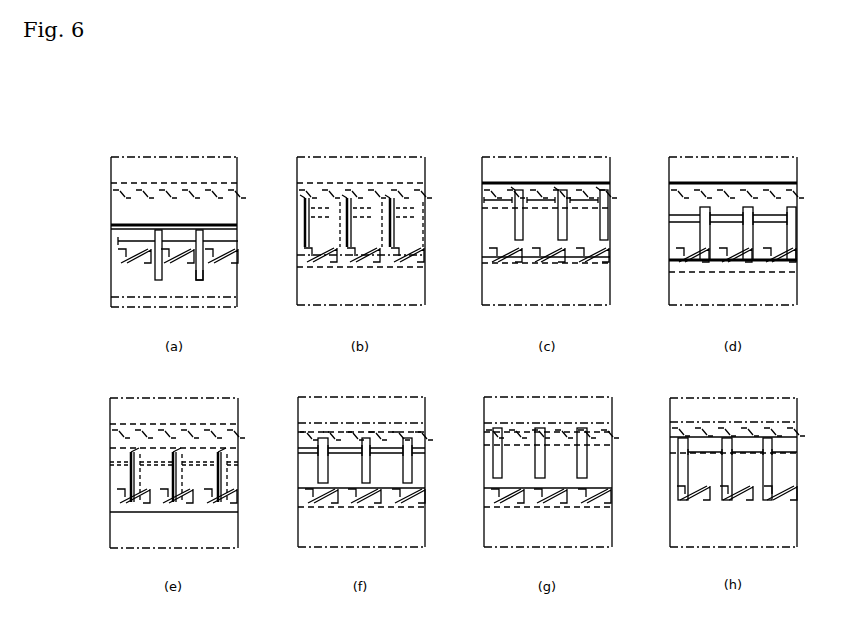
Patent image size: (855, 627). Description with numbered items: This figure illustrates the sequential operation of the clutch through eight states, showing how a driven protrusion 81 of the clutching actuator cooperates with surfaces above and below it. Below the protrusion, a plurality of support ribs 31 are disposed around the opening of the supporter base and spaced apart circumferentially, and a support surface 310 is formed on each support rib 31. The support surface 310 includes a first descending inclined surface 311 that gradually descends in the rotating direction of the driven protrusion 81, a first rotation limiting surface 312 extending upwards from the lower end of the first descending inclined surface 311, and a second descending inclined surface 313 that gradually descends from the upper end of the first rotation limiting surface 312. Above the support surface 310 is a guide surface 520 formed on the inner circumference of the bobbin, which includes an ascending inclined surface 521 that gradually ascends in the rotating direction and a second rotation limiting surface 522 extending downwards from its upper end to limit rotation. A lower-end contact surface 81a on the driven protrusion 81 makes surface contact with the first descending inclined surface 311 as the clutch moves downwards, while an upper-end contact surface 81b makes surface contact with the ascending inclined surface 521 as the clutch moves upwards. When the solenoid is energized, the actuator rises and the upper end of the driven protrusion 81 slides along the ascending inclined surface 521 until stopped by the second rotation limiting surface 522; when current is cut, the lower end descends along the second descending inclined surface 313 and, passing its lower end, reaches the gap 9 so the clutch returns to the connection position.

The guide surface 520 is at (137, 201).
The ascending inclined surface 521 is at (153, 207).
The second rotation limiting surface 522 is at (152, 188).
The driven protrusion 81 is at (203, 263).
The lower-end contact surface 81a is at (215, 301).
The upper-end contact surface 81b is at (191, 215).
The support rib 31 is at (137, 296).
The support surface 310 is at (115, 296).
The first descending inclined surface 311 is at (145, 296).
The first rotation limiting surface 312 is at (126, 284).
The second descending inclined surface 313 is at (104, 262).
The gap 9 is at (726, 531).